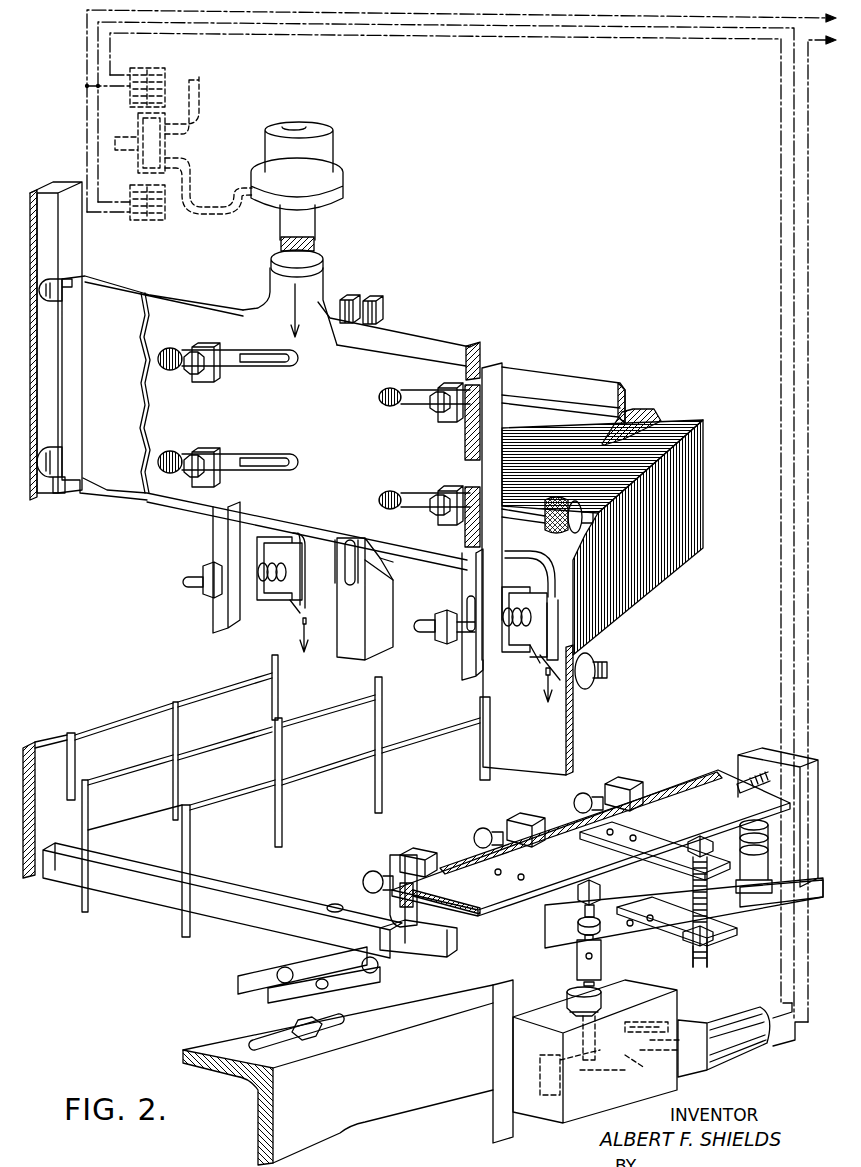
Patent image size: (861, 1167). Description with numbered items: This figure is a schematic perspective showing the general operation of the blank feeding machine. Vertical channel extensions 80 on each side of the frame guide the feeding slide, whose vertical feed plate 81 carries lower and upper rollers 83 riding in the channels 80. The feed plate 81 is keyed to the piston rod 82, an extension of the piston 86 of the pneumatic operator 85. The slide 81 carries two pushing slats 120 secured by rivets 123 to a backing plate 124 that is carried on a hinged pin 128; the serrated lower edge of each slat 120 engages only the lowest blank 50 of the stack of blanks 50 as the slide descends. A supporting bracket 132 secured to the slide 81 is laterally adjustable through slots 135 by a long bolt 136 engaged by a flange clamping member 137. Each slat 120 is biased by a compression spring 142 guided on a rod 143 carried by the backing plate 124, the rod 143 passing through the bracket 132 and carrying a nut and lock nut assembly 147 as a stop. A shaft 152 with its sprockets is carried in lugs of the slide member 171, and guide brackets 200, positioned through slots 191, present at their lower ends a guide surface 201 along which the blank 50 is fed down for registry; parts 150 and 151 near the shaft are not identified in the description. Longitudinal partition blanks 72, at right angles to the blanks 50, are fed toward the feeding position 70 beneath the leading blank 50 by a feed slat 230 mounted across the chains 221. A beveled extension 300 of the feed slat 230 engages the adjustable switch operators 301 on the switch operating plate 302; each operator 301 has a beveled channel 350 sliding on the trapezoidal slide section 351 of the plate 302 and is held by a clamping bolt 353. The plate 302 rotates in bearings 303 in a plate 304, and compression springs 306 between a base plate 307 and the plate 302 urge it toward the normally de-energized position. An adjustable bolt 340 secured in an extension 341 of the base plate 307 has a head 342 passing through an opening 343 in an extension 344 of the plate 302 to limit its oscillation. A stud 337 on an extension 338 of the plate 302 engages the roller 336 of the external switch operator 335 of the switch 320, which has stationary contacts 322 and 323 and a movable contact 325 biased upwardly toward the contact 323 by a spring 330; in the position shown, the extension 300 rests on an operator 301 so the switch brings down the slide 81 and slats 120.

The vertical channel extension 80 is at (57, 160).
The roller 83 is at (55, 281).
The pneumatic operator 85 is at (328, 152).
The piston 86 is at (318, 227).
The piston rod 82 is at (312, 248).
The guide bracket 200 is at (382, 300).
The guide surface 201 is at (383, 600).
The slot 191 is at (347, 555).
The feed plate 81 is at (425, 347).
The slot 135 is at (250, 365).
The long bolt 136 is at (188, 372).
The flange clamping member 137 is at (213, 382).
The blank 50 is at (716, 485).
The slide member 171 is at (630, 413).
The shaft 152 is at (520, 503).
The knurled knob 150 is at (562, 530).
The supporting bracket 132 is at (225, 527).
The pushing slat 120 is at (300, 538).
The compression spring 142 is at (272, 560).
The hinged pin 128 is at (297, 612).
The rod 143 is at (192, 580).
The nut and lock nut assembly 147 is at (213, 572).
The screw or rivet 123 is at (548, 620).
The backing plate 124 is at (553, 627).
The feeding position 70 is at (615, 650).
The roller 151 is at (590, 683).
The longitudinal blank 72 is at (135, 752).
The feed slat 230 is at (253, 913).
The chain 221 is at (243, 972).
The beveled extension 300 is at (405, 935).
The beveled channel 350 is at (408, 860).
The switch operating plate 302 is at (495, 908).
The slide section 351 is at (457, 870).
The switch operator 301 is at (628, 784).
The clamping bolt 353 is at (583, 793).
The extension 344 is at (652, 843).
The bolt head 342 is at (702, 836).
The compression spring 306 is at (768, 815).
The opening 343 is at (690, 862).
The extension 341 is at (733, 937).
The adjustable bolt 340 is at (710, 960).
The plate 304 is at (760, 752).
The bearing 303 is at (748, 778).
The extension 338 is at (578, 895).
The adjustable stud 337 is at (578, 937).
The roller 336 is at (578, 960).
The external switch operator 335 is at (605, 988).
The base plate 307 is at (223, 1043).
The switch 320 is at (538, 1113).
The spring 330 is at (575, 1048).
The stationary contact 323 is at (647, 995).
The stationary contact 322 is at (647, 1068).
The movable contact 325 is at (583, 1112).